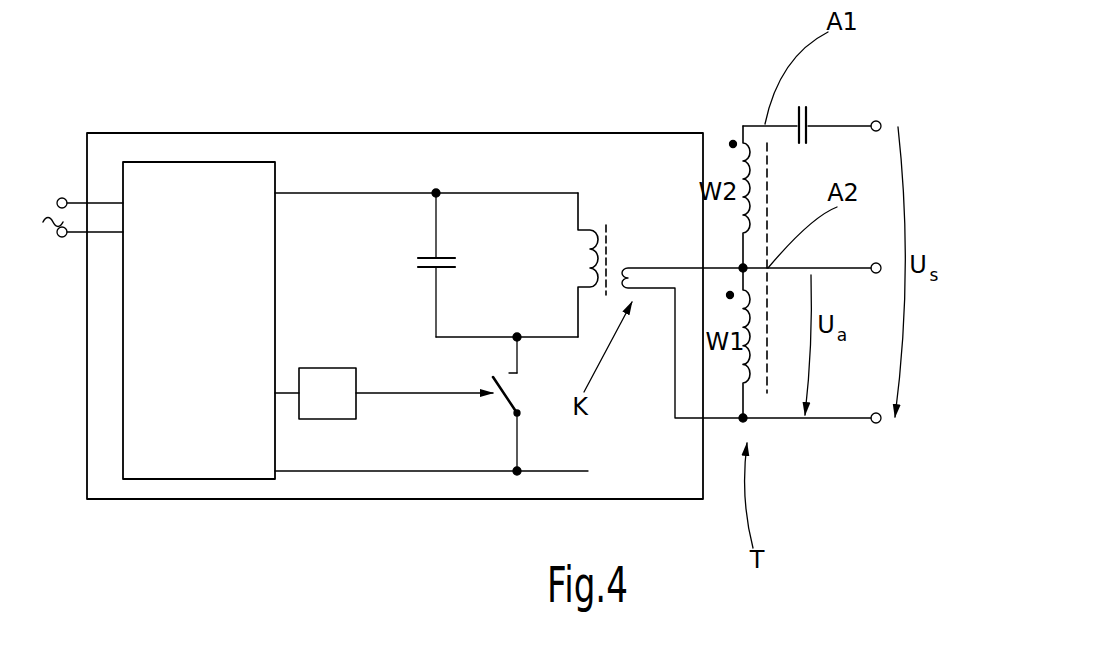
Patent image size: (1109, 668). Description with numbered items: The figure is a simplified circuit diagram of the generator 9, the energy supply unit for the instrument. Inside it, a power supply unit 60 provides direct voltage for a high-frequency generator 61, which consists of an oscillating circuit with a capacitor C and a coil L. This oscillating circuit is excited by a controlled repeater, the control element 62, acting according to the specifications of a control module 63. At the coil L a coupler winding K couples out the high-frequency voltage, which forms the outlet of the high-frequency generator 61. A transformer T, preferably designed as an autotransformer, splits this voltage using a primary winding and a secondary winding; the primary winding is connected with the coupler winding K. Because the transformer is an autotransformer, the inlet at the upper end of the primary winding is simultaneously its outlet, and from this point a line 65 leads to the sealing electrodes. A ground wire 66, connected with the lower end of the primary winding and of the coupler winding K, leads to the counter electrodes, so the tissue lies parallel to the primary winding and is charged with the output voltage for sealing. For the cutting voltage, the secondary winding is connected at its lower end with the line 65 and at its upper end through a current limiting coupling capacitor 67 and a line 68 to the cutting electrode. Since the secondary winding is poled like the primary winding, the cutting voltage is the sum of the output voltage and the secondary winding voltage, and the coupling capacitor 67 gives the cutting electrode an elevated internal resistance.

The generator 9 is at (487, 128).
The power supply unit 60 is at (191, 328).
The high-frequency generator 61 is at (598, 192).
The control element 62 is at (482, 415).
The control module 63 is at (313, 409).
The line 65 is at (830, 268).
The ground wire 66 is at (823, 418).
The coupling capacitor 67 is at (810, 118).
The line 68 is at (882, 122).